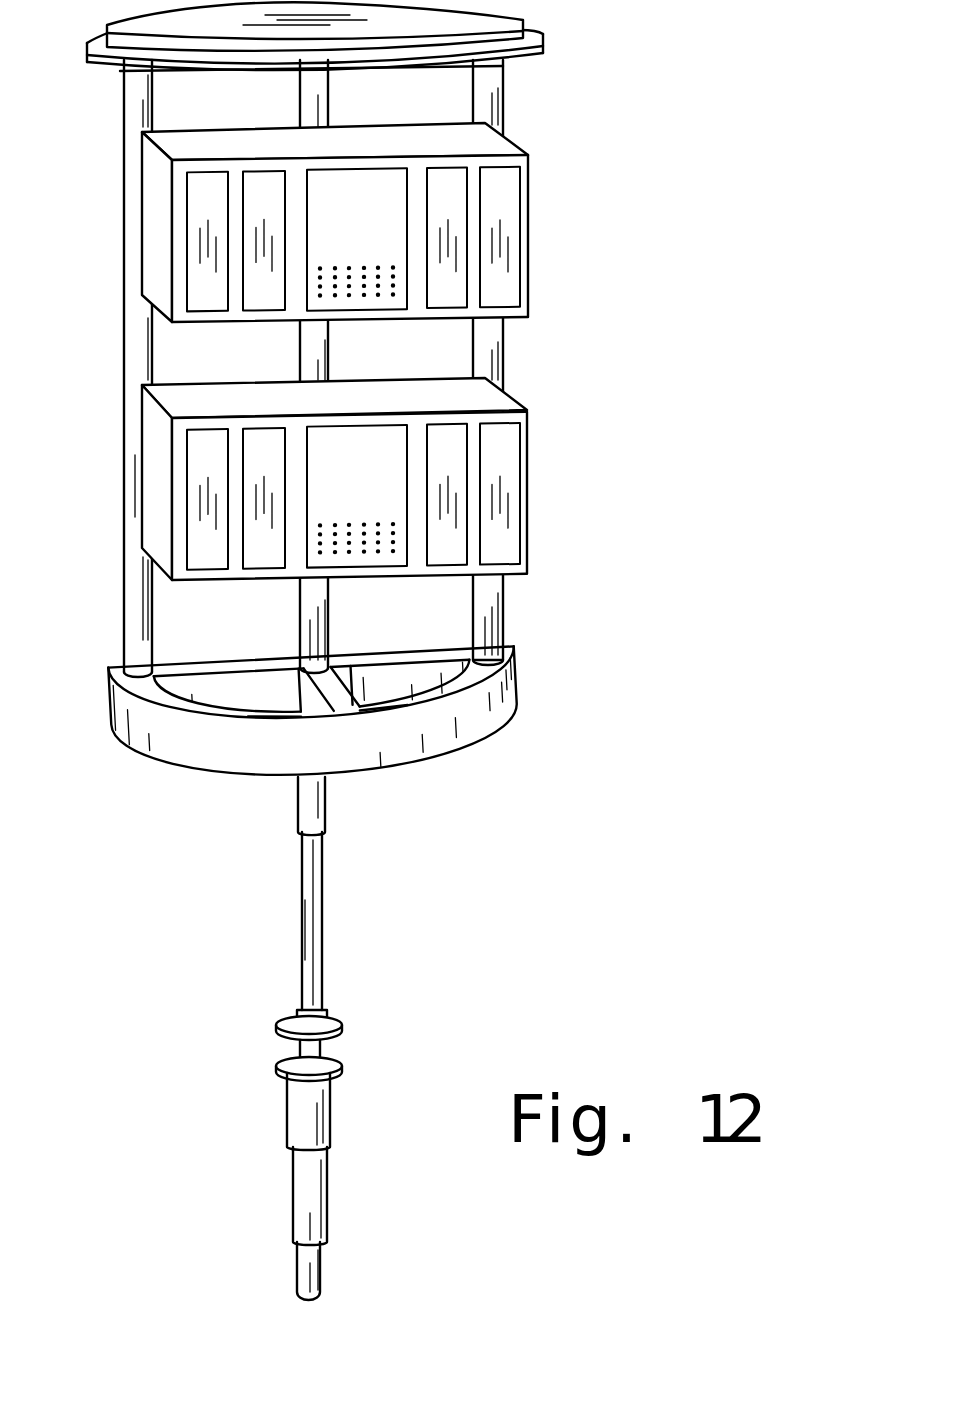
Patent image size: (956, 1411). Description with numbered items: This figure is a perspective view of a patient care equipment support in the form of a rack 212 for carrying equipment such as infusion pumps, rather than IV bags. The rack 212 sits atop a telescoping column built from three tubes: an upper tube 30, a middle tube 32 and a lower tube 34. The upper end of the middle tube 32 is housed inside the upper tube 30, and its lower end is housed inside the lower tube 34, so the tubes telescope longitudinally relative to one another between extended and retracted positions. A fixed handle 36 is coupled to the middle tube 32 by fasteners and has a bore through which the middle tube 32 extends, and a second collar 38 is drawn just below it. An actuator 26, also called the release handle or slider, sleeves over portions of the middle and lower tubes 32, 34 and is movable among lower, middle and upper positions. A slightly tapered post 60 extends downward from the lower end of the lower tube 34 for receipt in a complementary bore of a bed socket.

The rack 212 is at (596, 145).
The upper tube 30 is at (328, 813).
The middle tube 32 is at (315, 912).
The fixed handle 36 is at (342, 1020).
The washer 38 is at (337, 1060).
The actuator 26 is at (342, 1119).
The lower tube 34 is at (323, 1195).
The post 60 is at (318, 1273).